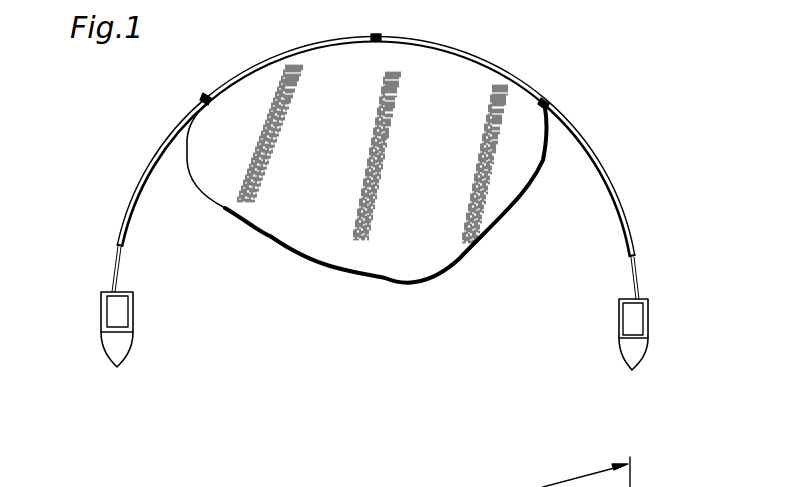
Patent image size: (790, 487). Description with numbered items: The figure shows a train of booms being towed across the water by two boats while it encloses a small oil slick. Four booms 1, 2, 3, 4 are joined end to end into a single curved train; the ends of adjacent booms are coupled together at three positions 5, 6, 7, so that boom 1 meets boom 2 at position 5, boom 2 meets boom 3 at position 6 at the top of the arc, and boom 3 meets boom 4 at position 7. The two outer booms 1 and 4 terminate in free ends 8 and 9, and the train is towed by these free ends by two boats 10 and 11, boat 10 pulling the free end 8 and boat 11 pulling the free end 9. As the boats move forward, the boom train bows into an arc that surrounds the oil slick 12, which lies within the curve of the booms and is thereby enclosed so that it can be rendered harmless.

The boom 1 is at (145, 170).
The boom 2 is at (273, 51).
The boom 3 is at (484, 61).
The boom 4 is at (605, 177).
The coupling position 5 is at (200, 95).
The coupling position 6 is at (380, 35).
The coupling position 7 is at (562, 78).
The free end 8 is at (117, 244).
The free end 9 is at (636, 257).
The boat 10 is at (101, 318).
The boat 11 is at (648, 322).
The oil slick 12 is at (322, 266).